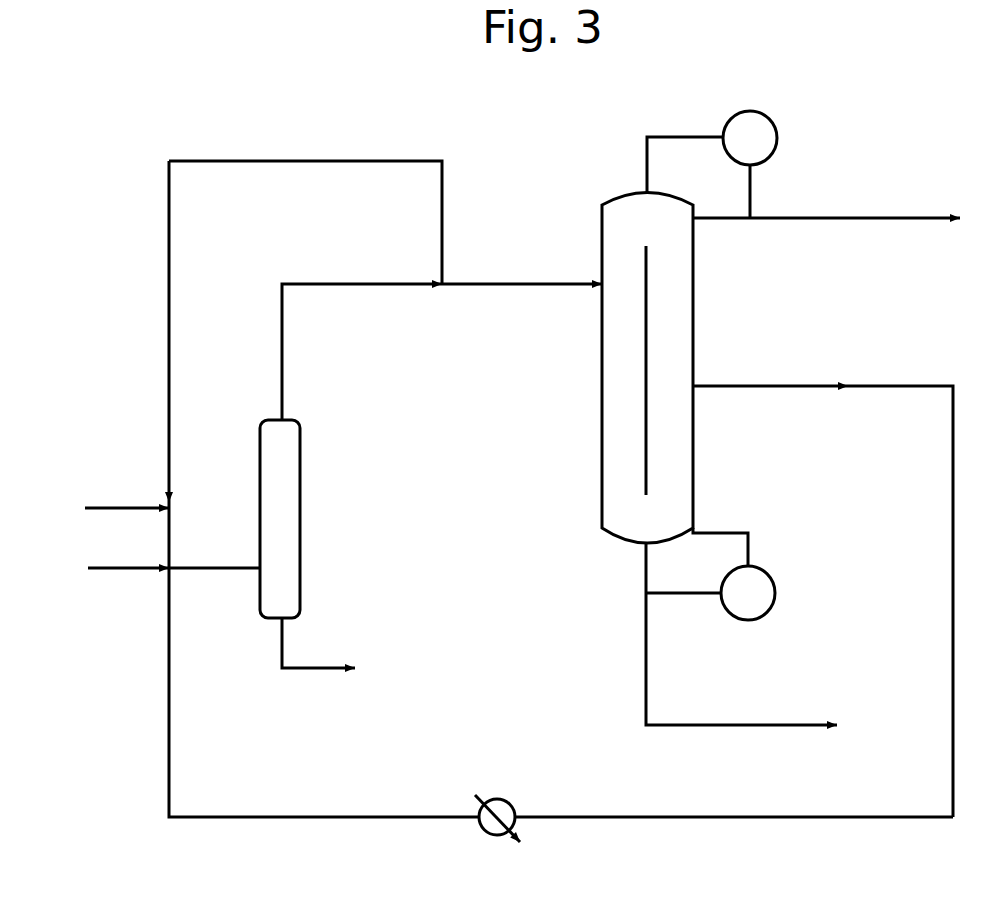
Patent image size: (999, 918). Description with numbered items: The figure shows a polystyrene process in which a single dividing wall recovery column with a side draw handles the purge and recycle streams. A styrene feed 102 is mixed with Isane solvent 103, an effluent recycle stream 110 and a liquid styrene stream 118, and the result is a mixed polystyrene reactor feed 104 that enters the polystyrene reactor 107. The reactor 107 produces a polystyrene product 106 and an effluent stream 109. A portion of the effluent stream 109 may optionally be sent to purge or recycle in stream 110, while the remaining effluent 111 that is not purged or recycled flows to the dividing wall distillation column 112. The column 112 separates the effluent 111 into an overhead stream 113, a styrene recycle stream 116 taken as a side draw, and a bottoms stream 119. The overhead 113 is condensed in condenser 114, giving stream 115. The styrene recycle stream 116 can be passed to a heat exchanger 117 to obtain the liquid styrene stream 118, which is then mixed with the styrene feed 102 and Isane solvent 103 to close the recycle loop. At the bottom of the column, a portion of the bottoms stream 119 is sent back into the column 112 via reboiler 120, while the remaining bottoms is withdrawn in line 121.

The styrene feed 102 is at (93, 560).
The Isane solvent 103 is at (100, 502).
The mixed polystyrene reactor feed 104 is at (222, 563).
The polystyrene product 106 is at (302, 665).
The polystyrene reactor 107 is at (310, 500).
The effluent stream 109 is at (315, 280).
The effluent recycle stream 110 is at (397, 153).
The remaining effluent 111 is at (532, 280).
The dividing wall distillation column 112 is at (597, 372).
The overhead stream 113 is at (660, 133).
The condenser 114 is at (782, 138).
The condensed overhead stream 115 is at (877, 213).
The styrene recycle stream 116 is at (947, 478).
The heat exchanger 117 is at (487, 837).
The liquid styrene stream 118 is at (162, 722).
The bottoms stream 119 is at (640, 578).
The reboiler 120 is at (782, 592).
The bottoms withdrawal line 121 is at (703, 720).